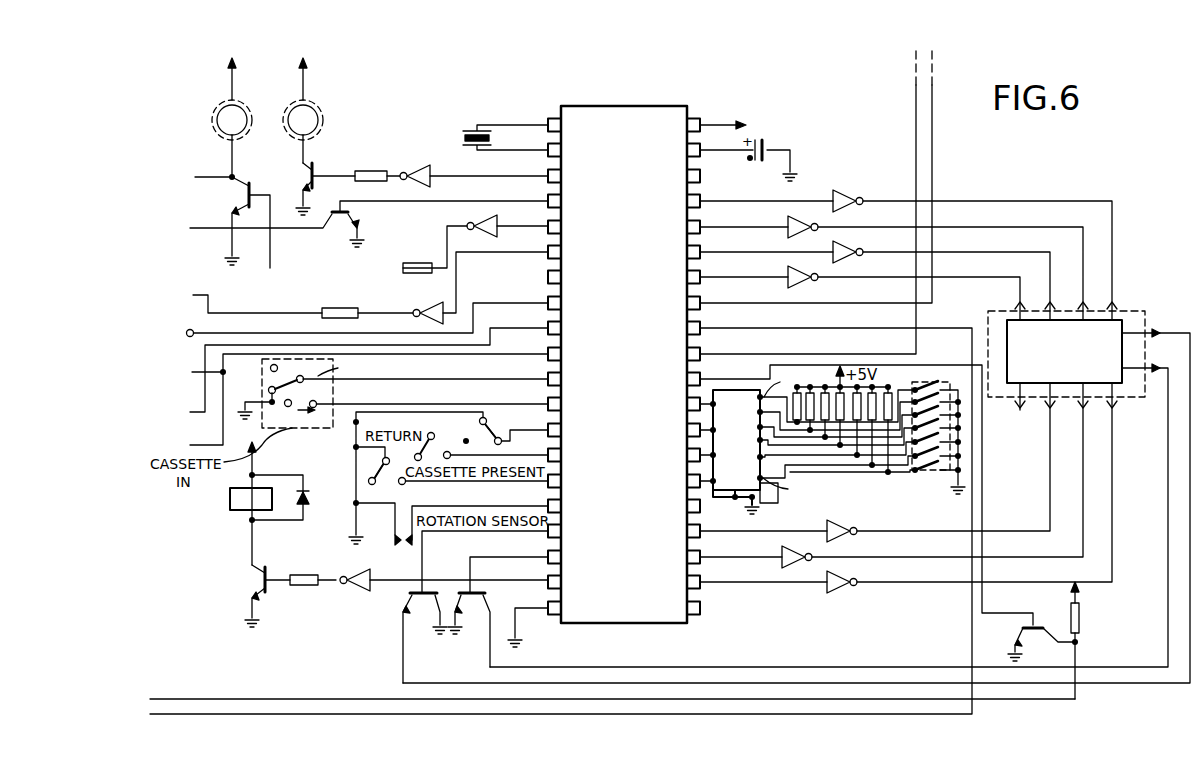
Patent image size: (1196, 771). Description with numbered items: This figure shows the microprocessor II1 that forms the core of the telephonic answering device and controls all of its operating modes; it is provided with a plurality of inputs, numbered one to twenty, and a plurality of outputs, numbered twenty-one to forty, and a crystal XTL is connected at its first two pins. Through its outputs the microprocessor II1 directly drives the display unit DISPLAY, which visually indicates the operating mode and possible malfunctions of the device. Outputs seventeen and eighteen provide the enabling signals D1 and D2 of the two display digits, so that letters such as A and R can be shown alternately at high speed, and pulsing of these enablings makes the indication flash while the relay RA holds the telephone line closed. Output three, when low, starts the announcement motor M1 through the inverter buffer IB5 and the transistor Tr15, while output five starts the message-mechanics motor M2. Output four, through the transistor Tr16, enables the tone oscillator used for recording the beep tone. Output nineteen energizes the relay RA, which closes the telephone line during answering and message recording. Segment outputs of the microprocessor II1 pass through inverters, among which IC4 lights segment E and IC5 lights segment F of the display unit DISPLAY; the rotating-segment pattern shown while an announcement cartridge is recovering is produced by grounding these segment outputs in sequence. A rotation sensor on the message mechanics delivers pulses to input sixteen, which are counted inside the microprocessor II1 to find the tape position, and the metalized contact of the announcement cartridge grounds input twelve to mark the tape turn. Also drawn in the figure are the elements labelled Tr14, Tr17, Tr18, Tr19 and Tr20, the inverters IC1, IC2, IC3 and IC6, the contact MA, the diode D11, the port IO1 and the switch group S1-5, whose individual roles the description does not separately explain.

The microprocessor II1 is at (624, 364).
The crystal XTL is at (505, 138).
The motor of the announcement mechanics M1 is at (306, 102).
The motor of the message mechanics M2 is at (235, 109).
The transistor Tr14 is at (229, 221).
The transistor Tr15 is at (313, 189).
The transistor Tr16 is at (369, 225).
The transistor Tr17 is at (250, 596).
The phototransistor Tr18 is at (475, 607).
The phototransistor Tr19 is at (498, 612).
The transistor Tr20 is at (1066, 640).
The inverter buffer IB5 is at (449, 171).
The inverter IC1 is at (419, 582).
The inverter IC2 is at (370, 293).
The inverter IC3 is at (473, 238).
The inverter IC4 is at (906, 503).
The inverter IC5 is at (891, 480).
The inverter IC6 is at (875, 462).
The cassette present switch MA is at (388, 393).
The relay RA is at (266, 499).
The diode D11 is at (321, 500).
The display digit enabling D1 is at (796, 497).
The display digit enabling D2 is at (818, 507).
The input/output port IO1 is at (747, 443).
The switch bank S1-5 is at (938, 439).
The display unit DISPLAY is at (1066, 356).